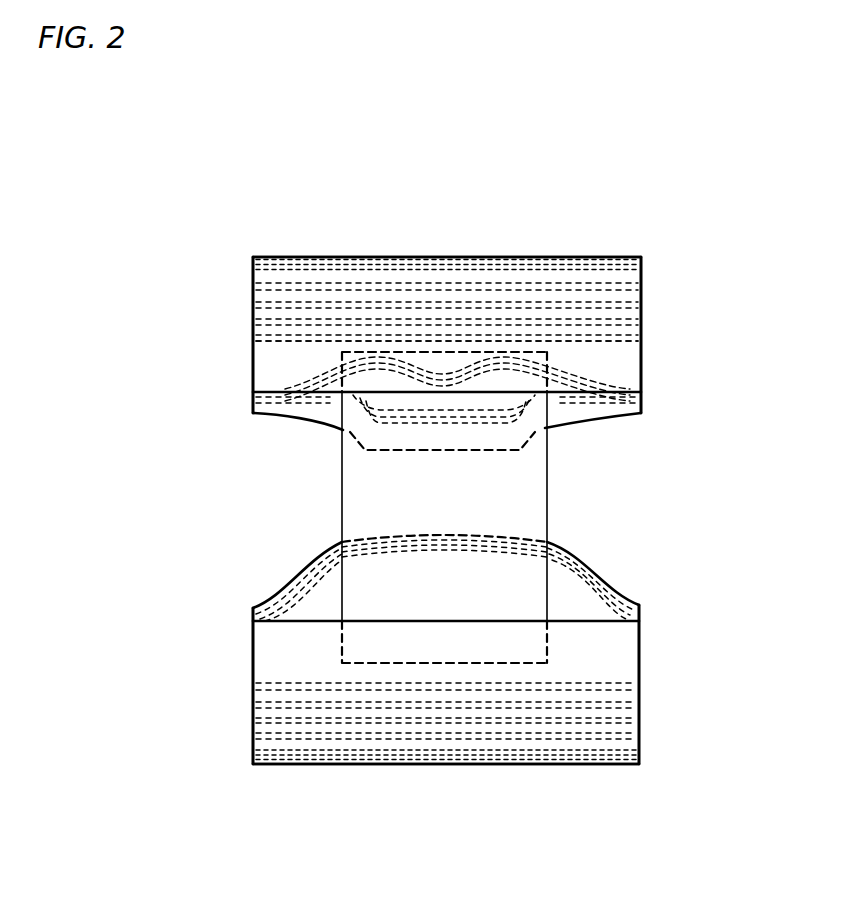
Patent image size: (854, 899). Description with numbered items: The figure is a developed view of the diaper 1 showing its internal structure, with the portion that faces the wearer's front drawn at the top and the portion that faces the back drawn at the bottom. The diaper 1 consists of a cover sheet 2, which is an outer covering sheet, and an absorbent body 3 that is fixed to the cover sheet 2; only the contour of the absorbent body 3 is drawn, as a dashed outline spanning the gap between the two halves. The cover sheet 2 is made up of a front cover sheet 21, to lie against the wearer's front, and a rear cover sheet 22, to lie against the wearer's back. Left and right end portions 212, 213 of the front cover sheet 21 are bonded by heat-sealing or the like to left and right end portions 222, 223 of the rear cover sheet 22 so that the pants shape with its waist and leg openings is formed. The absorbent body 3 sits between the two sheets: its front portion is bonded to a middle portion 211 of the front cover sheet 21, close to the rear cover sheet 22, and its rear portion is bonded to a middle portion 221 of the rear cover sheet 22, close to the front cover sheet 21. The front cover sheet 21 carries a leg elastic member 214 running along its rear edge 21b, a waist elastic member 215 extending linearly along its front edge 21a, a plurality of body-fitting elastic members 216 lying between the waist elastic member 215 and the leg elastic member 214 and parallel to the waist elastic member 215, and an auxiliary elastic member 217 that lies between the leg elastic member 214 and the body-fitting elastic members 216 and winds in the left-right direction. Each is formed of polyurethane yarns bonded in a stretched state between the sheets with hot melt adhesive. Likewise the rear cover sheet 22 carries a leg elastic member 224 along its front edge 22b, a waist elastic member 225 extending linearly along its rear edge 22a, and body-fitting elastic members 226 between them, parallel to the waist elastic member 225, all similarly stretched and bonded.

The diaper 1 is at (151, 151).
The cover sheet 2 is at (251, 164).
The front cover sheet 21 is at (285, 257).
The front edge of front cover sheet 21a is at (342, 257).
The rear edge of front cover sheet 21b is at (300, 425).
The rear cover sheet 22 is at (288, 765).
The rear edge of rear cover sheet 22a is at (340, 765).
The front edge of rear cover sheet 22b is at (298, 575).
The absorbent body 3 is at (547, 492).
The middle portion of front cover sheet 211 is at (372, 391).
The left end portion of front cover sheet 212 is at (240, 360).
The right end portion of front cover sheet 213 is at (655, 360).
The leg elastic member 214 is at (568, 416).
The waist elastic member 215 is at (371, 251).
The body-fitting elastic members 216 is at (441, 273).
The auxiliary elastic member 217 is at (648, 314).
The middle portion of rear cover sheet 221 is at (388, 609).
The left end portion of rear cover sheet 222 is at (238, 736).
The right end portion of rear cover sheet 223 is at (657, 728).
The leg elastic member 224 is at (628, 625).
The waist elastic member 225 is at (381, 770).
The body-fitting elastic members 226 is at (441, 746).